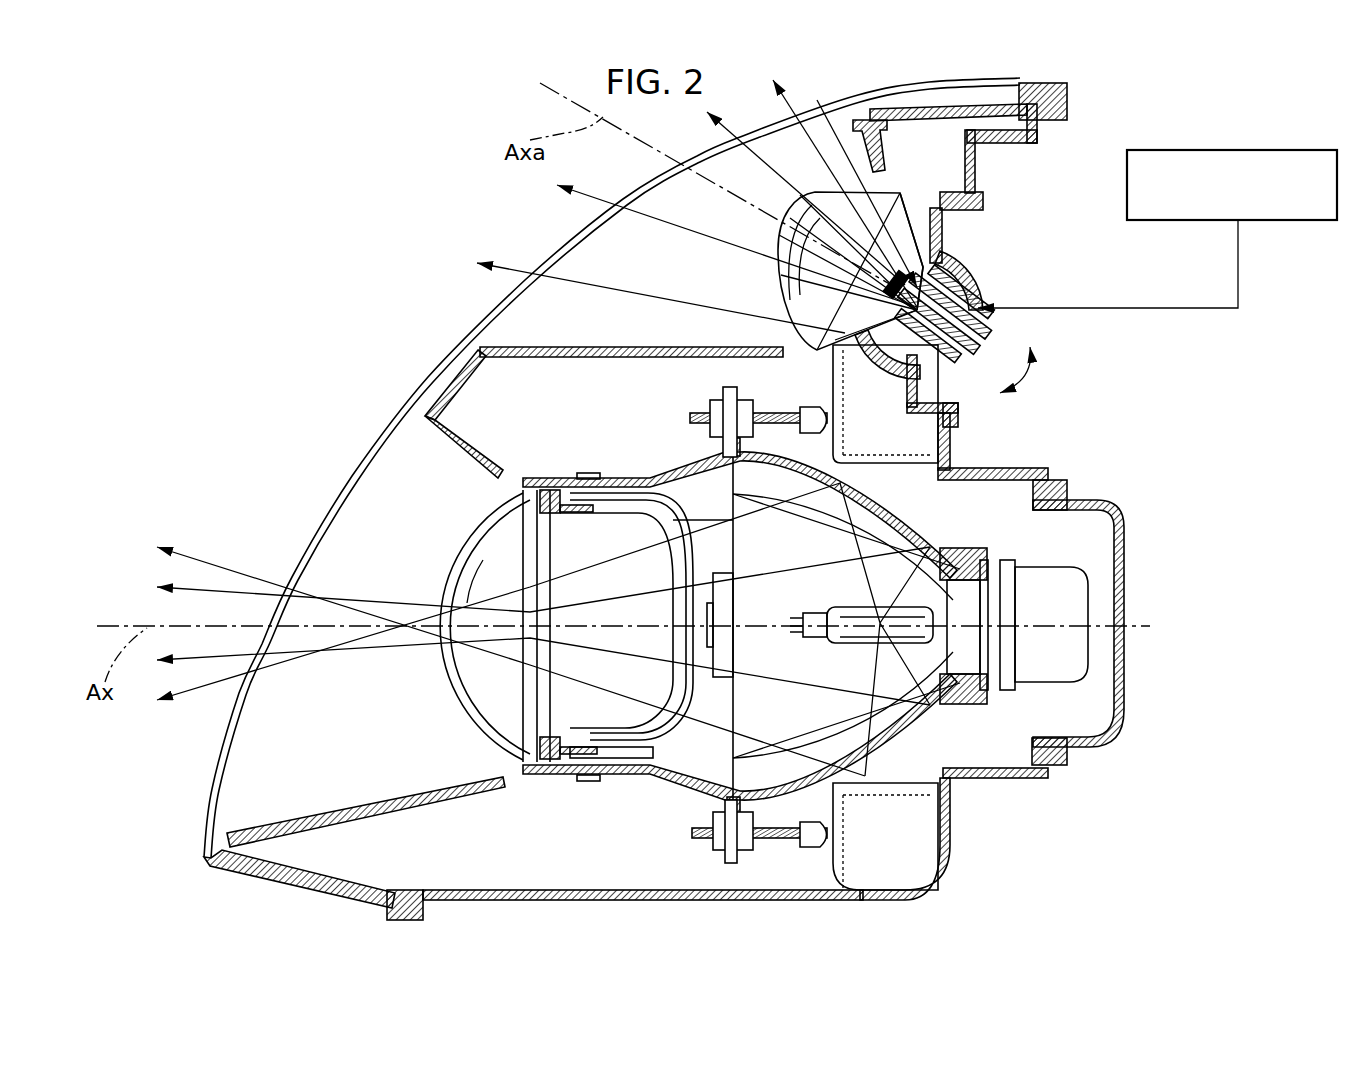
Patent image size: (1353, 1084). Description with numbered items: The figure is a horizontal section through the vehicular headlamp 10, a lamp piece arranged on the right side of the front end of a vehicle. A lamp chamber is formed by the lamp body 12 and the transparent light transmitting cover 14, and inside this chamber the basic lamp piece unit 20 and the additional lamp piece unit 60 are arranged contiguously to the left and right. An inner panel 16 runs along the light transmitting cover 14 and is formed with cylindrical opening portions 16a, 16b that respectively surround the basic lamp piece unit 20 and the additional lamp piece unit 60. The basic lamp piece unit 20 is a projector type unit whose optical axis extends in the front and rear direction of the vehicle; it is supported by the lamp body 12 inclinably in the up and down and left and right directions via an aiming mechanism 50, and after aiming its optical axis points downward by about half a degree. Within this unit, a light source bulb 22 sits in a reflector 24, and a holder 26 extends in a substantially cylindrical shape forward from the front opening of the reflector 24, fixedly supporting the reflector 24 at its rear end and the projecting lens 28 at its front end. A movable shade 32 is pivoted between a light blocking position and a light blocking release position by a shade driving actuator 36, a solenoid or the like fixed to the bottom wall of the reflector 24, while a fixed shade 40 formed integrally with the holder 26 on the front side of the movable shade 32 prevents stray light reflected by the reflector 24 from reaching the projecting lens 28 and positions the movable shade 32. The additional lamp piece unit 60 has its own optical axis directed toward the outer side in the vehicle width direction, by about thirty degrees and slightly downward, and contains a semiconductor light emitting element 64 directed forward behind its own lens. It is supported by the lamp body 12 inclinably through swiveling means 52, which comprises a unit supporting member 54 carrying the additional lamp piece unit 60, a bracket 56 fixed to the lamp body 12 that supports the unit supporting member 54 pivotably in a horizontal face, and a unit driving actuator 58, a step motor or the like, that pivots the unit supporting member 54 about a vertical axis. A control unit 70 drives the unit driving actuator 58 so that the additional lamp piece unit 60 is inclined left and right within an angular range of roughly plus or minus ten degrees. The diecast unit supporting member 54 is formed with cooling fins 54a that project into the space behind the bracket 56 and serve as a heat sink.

The vehicular headlamp 10 is at (445, 205).
The lamp body 12 is at (1040, 466).
The light transmitting cover 14 is at (478, 320).
The inner panel 16 is at (435, 385).
The cylindrical opening portion 16a is at (343, 803).
The cylindrical opening portion 16b is at (587, 347).
The basic lamp piece unit 20 is at (443, 495).
The light source bulb 22 is at (853, 603).
The reflector 24 is at (903, 730).
The holder 26 is at (697, 727).
The projecting lens 28 is at (468, 707).
The movable shade 32 is at (720, 677).
The shade driving actuator 36 is at (740, 640).
The fixed shade 40 is at (657, 707).
The aiming mechanism 50 is at (660, 400).
The swiveling means 52 is at (1017, 322).
The unit supporting member 54 is at (955, 293).
The cooling fins 54a is at (957, 387).
The bracket 56 is at (940, 230).
The unit driving actuator 58 is at (980, 297).
The additional lamp piece unit 60 is at (757, 183).
The semiconductor light emitting element 64 is at (923, 235).
The control unit 70 is at (1283, 220).